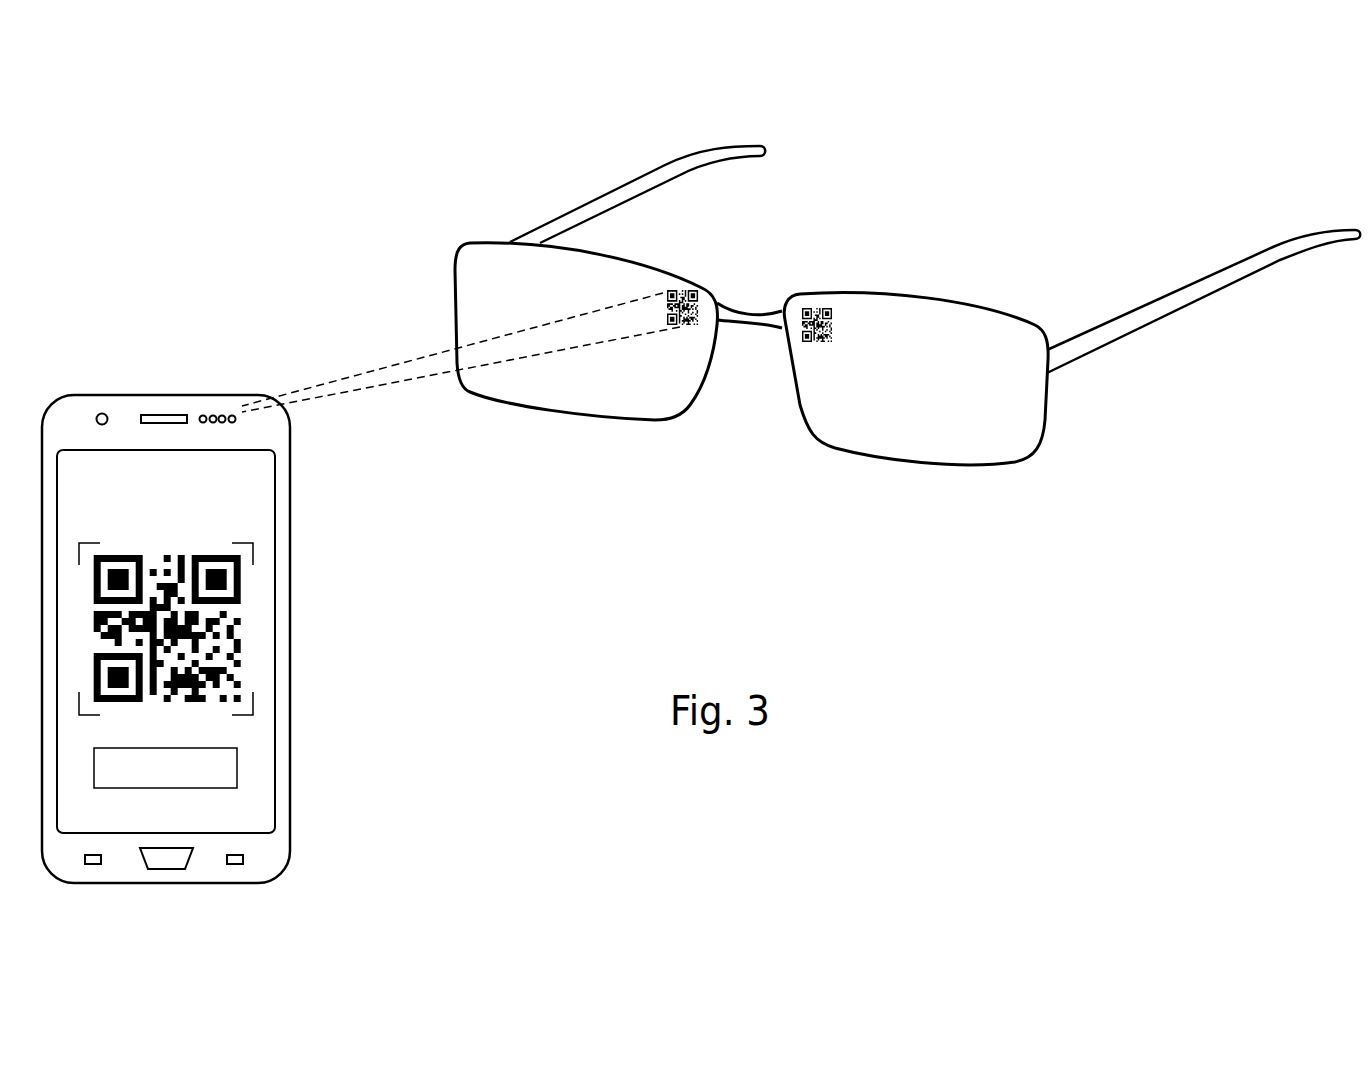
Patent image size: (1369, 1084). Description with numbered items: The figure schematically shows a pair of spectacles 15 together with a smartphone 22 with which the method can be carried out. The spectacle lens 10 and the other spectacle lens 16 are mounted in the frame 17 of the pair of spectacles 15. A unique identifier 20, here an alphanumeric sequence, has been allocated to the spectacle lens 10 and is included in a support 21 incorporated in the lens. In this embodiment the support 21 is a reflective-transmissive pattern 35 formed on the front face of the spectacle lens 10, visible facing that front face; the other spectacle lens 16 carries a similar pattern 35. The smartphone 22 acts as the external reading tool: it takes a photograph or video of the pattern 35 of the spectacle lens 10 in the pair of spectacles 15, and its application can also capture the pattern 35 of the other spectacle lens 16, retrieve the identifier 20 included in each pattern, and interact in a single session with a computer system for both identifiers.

The spectacle lens 10 is at (613, 385).
The pair of spectacles 15 is at (907, 316).
The other spectacle lens 16 is at (918, 413).
The frame 17 is at (688, 284).
The identifier 20 is at (233, 767).
The support 21 is at (748, 263).
The smartphone 22 is at (190, 576).
The reflective-transmissive pattern 35 is at (748, 305).